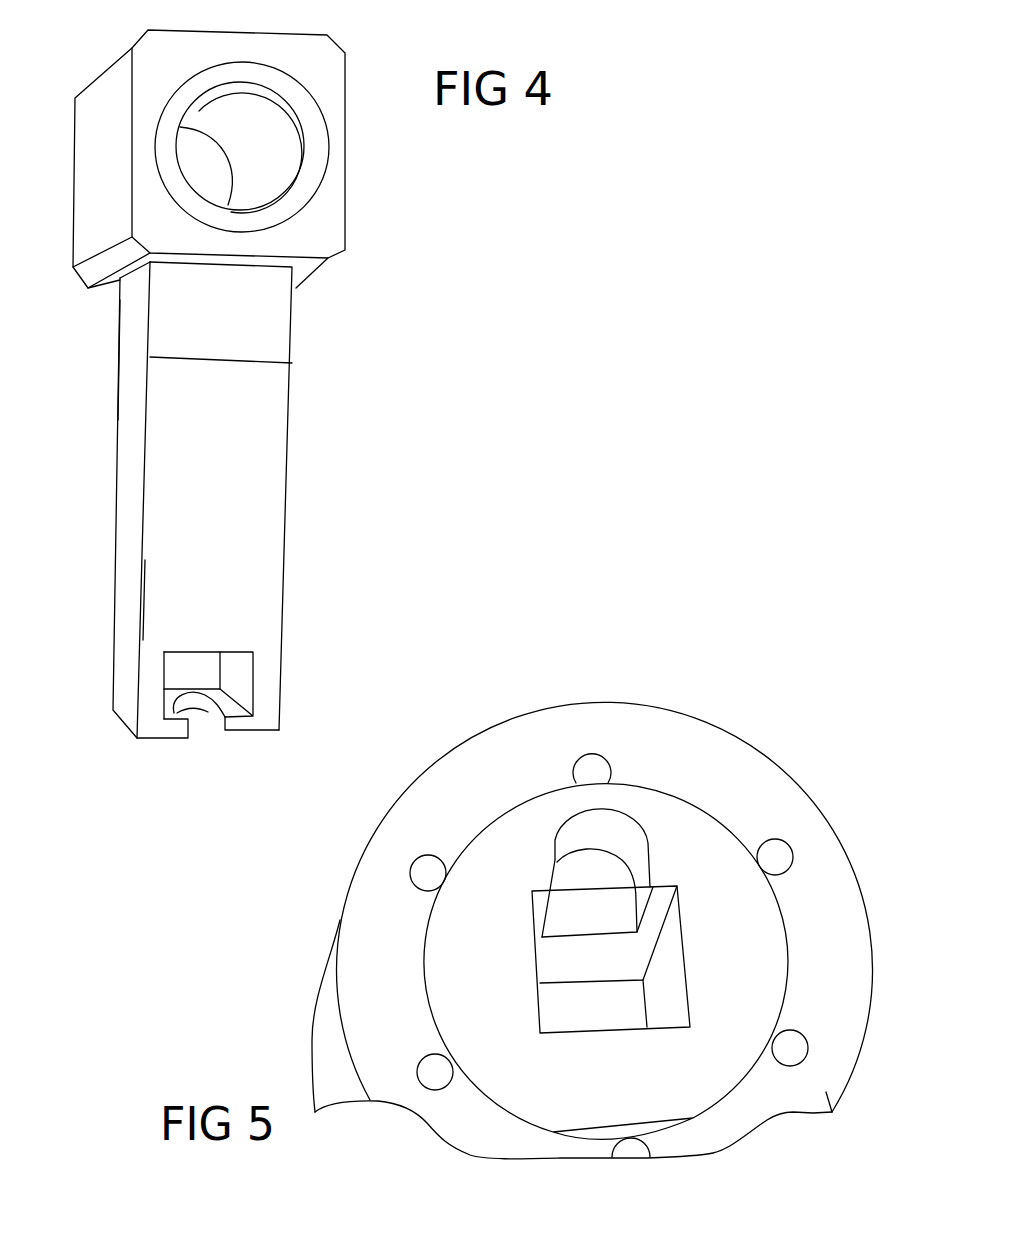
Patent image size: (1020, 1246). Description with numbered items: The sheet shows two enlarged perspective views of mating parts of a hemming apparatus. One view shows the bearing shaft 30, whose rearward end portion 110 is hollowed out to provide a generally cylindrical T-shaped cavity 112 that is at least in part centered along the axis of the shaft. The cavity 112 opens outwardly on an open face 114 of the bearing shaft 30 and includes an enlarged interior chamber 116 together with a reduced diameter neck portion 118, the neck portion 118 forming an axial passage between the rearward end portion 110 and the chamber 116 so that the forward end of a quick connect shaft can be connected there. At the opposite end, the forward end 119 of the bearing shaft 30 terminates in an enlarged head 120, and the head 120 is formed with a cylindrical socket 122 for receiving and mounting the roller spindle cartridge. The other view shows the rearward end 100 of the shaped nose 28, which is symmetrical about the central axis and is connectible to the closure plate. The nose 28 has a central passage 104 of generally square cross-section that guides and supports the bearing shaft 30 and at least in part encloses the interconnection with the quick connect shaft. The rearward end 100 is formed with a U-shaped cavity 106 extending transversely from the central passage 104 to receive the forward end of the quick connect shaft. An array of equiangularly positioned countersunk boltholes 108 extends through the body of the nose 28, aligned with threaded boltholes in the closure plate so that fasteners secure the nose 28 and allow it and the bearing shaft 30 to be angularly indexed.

In FIG. 5, the shaped nose 28 is at (385, 1141).
In FIG. 4, the bearing shaft 30 is at (340, 357).
In FIG. 5, the rearward end 100 is at (790, 810).
In FIG. 5, the central passage 104 is at (635, 1002).
In FIG. 5, the U-shaped cavity 106 is at (615, 852).
In FIG. 5, the countersunk boltholes 108 is at (593, 765).
In FIG. 4, the rearward end portion 110 is at (100, 616).
In FIG. 4, the T-shaped cavity 112 is at (290, 695).
In FIG. 4, the open face 114 is at (190, 605).
In FIG. 4, the enlarged interior chamber 116 is at (233, 677).
In FIG. 4, the reduced diameter neck portion 118 is at (205, 713).
In FIG. 4, the forward end 119 is at (130, 375).
In FIG. 4, the enlarged head 120 is at (320, 63).
In FIG. 4, the cylindrical socket 122 is at (260, 163).